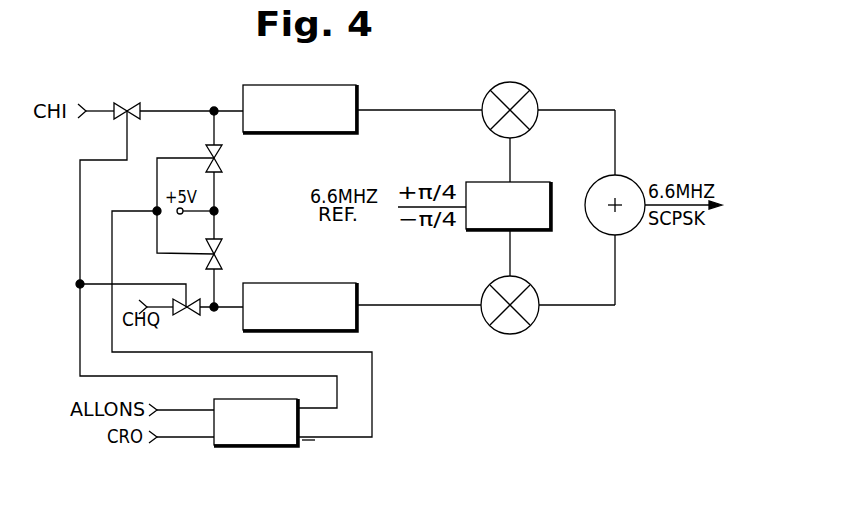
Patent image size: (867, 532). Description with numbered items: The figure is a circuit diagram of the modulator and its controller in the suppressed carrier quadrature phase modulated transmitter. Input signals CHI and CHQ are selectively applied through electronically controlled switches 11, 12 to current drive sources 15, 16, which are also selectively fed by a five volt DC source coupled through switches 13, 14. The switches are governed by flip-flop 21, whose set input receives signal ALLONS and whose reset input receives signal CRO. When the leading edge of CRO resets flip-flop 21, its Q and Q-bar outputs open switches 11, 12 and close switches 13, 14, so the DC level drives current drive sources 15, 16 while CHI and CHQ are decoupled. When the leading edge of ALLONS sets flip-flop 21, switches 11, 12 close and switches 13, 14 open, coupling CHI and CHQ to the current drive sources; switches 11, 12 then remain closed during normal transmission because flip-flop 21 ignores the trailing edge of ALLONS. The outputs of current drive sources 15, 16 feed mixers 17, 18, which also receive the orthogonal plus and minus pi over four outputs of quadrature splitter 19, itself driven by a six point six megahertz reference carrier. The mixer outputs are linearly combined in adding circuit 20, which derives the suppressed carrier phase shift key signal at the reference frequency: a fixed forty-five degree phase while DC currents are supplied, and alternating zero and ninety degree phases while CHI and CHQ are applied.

The electronically controlled switch 11 is at (138, 103).
The electronically controlled switch 12 is at (190, 316).
The switch 13 is at (222, 160).
The switch 14 is at (222, 252).
The current drive source 15 is at (357, 85).
The current drive source 16 is at (357, 283).
The mixer 17 is at (530, 91).
The mixer 18 is at (531, 286).
The quadrature splitter 19 is at (550, 182).
The adding circuit 20 is at (639, 173).
The flip-flop 21 is at (258, 446).